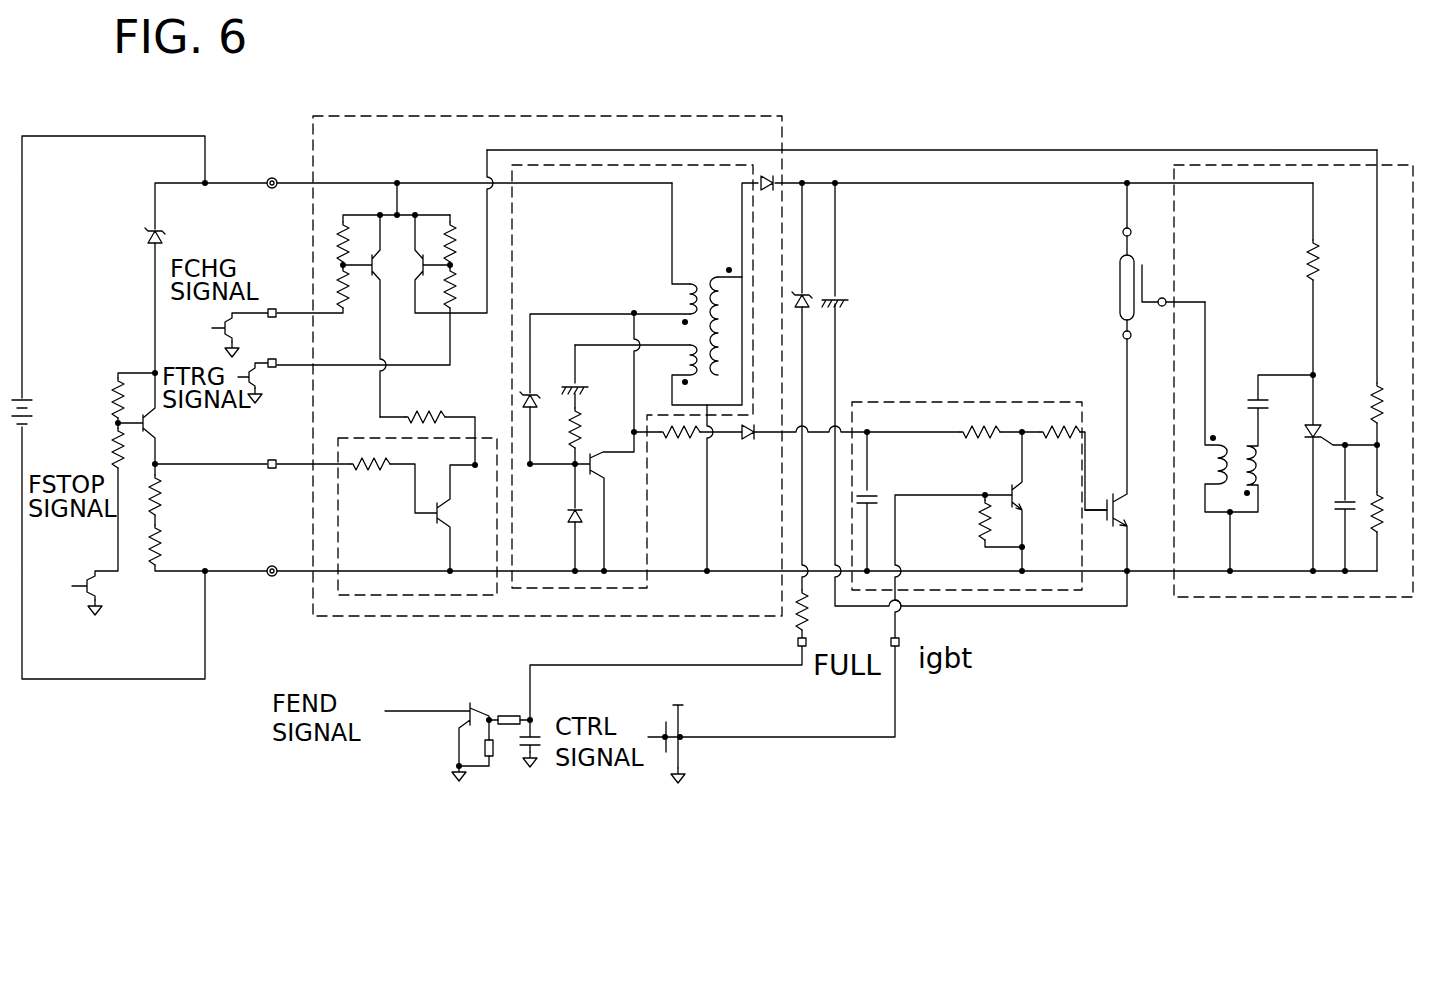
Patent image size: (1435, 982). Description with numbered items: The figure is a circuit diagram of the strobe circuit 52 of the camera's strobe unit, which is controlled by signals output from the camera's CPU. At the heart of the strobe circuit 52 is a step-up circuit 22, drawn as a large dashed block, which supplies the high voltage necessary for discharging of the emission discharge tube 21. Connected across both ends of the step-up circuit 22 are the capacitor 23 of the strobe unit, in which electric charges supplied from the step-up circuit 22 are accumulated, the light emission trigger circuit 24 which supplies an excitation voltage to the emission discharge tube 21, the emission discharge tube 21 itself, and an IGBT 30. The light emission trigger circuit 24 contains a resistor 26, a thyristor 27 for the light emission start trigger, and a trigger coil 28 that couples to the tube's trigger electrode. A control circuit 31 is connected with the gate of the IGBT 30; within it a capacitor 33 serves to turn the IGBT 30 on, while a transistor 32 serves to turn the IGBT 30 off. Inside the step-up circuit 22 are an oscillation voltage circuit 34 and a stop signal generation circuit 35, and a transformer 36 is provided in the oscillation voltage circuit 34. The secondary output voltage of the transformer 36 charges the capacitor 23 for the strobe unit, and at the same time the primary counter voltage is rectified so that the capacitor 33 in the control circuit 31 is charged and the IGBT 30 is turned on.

The emission discharge tube 21 is at (1120, 280).
The step-up circuit 22 is at (549, 116).
The capacitor 23 is at (845, 302).
The light emission trigger circuit 24 is at (1296, 165).
The resistor 26 is at (1313, 237).
The thyristor 27 is at (1328, 426).
The trigger coil 28 is at (1272, 474).
The IGBT 30 is at (1130, 502).
The control circuit 31 is at (960, 400).
The transistor 32 is at (1025, 495).
The capacitor 33 is at (872, 490).
The oscillation voltage circuit 34 is at (515, 133).
The stop signal generation circuit 35 is at (362, 600).
The transformer 36 is at (709, 268).
The strobe circuit 52 is at (690, 59).